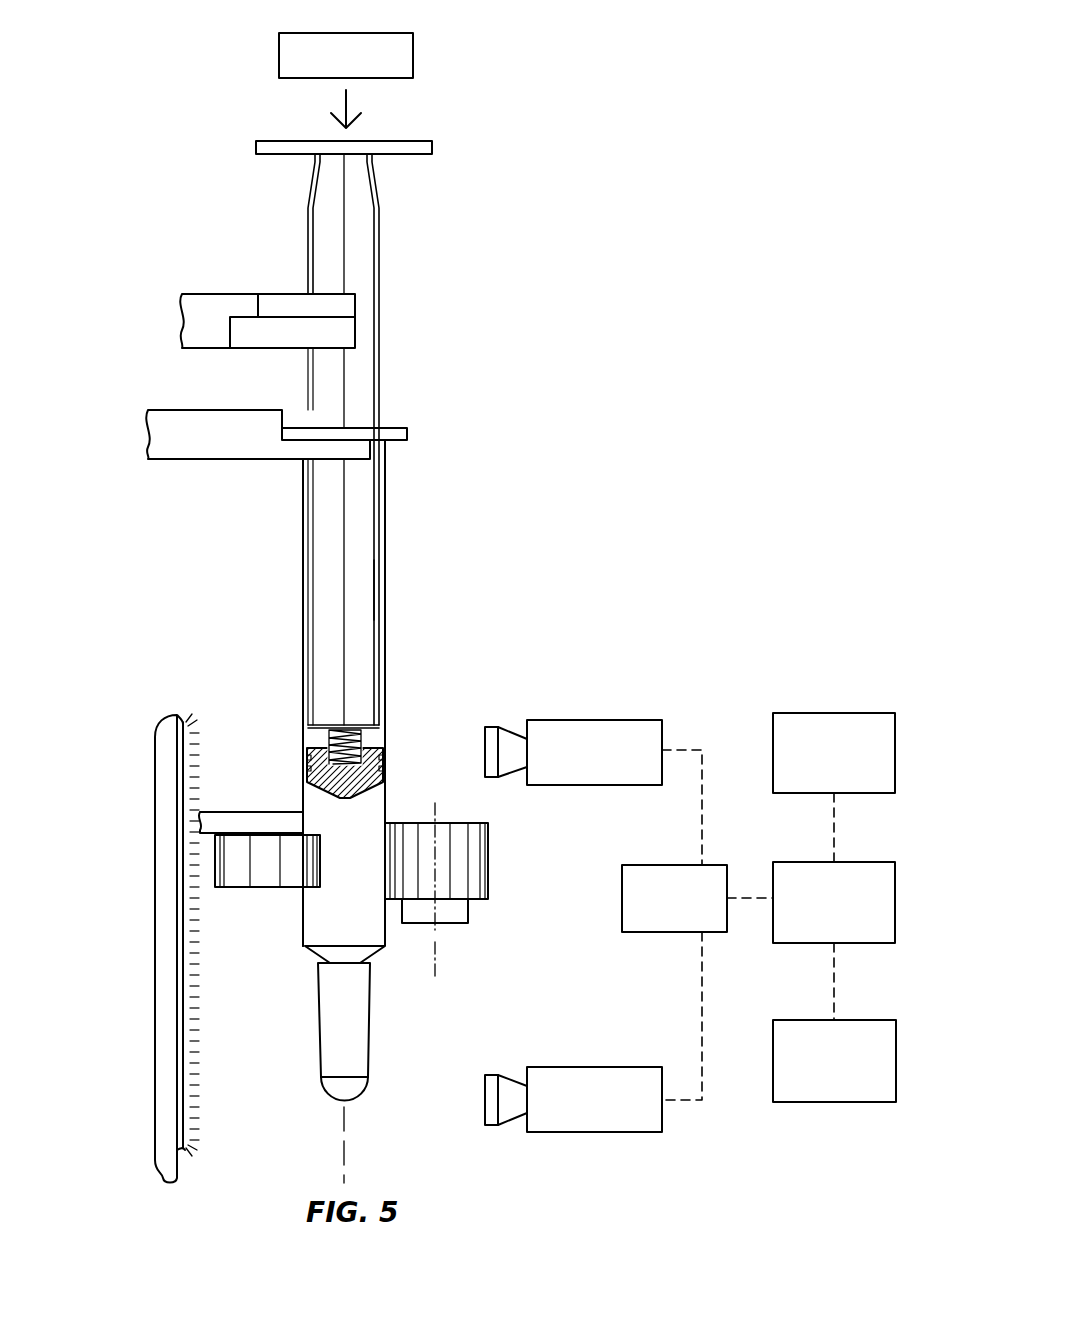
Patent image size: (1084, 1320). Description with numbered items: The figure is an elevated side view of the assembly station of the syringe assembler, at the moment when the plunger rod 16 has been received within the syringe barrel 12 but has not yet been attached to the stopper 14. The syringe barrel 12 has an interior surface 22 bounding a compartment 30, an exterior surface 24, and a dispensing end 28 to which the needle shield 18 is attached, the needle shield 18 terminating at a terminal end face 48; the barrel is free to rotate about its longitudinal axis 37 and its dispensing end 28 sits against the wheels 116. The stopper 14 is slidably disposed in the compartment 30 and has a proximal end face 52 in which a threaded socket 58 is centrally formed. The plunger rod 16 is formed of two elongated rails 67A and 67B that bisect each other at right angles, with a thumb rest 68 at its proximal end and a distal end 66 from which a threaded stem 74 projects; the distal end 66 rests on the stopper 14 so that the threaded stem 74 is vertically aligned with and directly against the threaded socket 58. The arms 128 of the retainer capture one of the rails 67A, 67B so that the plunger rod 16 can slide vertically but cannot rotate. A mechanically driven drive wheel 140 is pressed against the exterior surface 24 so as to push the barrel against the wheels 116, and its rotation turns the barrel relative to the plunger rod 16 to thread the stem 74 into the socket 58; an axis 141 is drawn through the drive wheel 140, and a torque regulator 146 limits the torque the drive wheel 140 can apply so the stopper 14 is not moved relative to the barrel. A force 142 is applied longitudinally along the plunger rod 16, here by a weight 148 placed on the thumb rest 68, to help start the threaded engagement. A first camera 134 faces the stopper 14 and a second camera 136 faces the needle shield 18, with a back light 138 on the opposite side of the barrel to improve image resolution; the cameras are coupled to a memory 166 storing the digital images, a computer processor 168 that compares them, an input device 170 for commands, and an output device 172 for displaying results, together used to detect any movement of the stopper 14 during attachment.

The syringe barrel 12 is at (385, 470).
The stopper 14 is at (352, 738).
The plunger rod 16 is at (385, 439).
The needle shield 18 is at (370, 1025).
The interior surface 22 is at (304, 742).
The exterior surface 24 is at (303, 924).
The dispensing end 28 is at (392, 945).
The compartment 30 is at (366, 594).
The longitudinal axis 37 is at (344, 1146).
The terminal end face 48 is at (358, 1097).
The proximal end face 52 is at (370, 740).
The threaded socket 58 is at (330, 752).
The distal end 66 is at (288, 735).
The first elongated rail 67A is at (317, 232).
The second elongated rail 67B is at (369, 267).
The thumb rest 68 is at (432, 146).
The threaded stem 74 is at (387, 721).
The wheels 116 is at (223, 860).
The arms 128 is at (280, 348).
The first camera 134 is at (625, 728).
The second camera 136 is at (612, 1132).
The back light 138 is at (166, 858).
The drive wheel 140 is at (488, 850).
The roller axis 141 is at (436, 938).
The force 142 is at (352, 97).
The torque regulator 146 is at (468, 910).
The weight 148 is at (413, 52).
The memory 166 is at (722, 891).
The computer processor 168 is at (848, 862).
The input device 170 is at (848, 1020).
The output device 172 is at (848, 713).